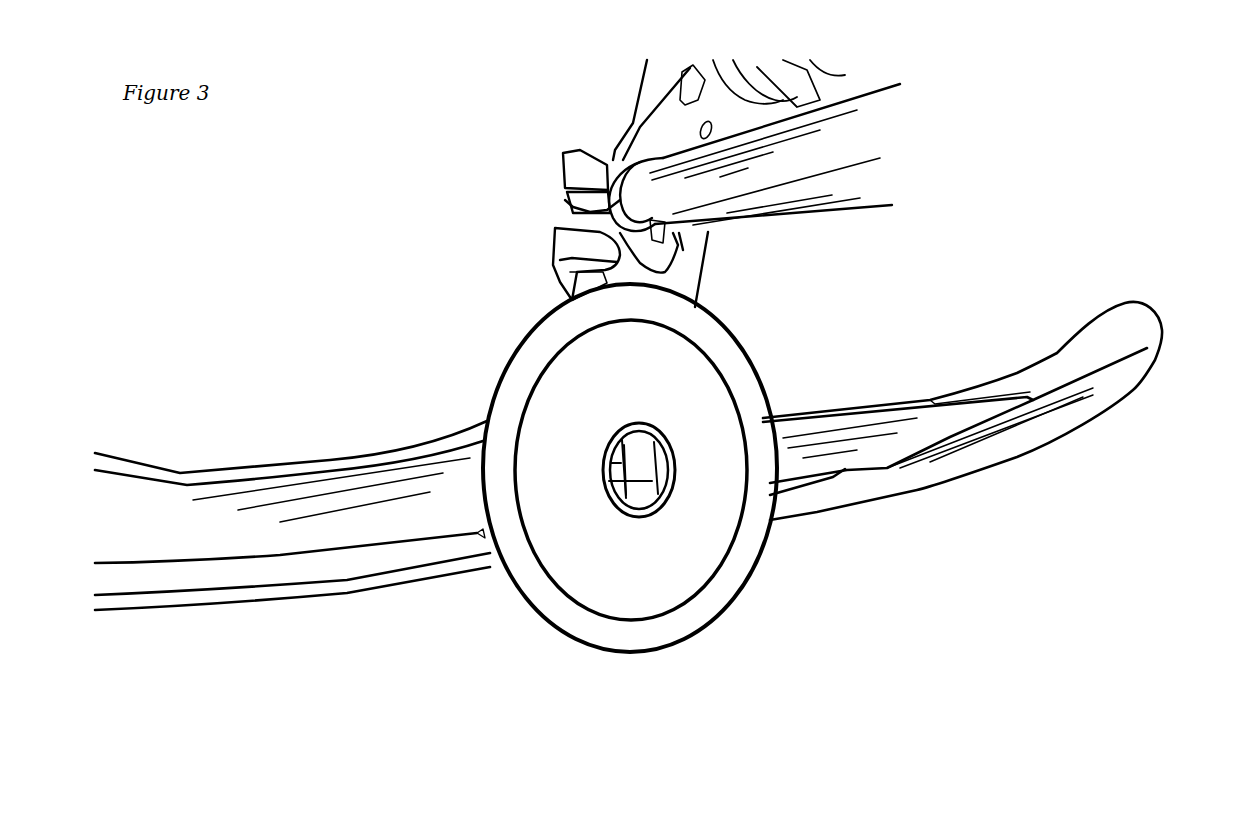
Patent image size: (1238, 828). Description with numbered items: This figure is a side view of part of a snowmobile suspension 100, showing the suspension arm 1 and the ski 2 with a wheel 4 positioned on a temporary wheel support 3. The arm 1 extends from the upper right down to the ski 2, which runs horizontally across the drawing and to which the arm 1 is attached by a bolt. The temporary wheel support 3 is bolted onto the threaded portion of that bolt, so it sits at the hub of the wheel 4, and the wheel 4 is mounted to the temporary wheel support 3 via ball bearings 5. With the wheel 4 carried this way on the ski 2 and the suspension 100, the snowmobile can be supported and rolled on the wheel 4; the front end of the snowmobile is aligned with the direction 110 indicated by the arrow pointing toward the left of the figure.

The arm 1 is at (657, 150).
The ski 2 is at (440, 490).
The temporary wheel support 3 is at (640, 467).
The wheel 4 is at (703, 381).
The ball bearings 5 is at (607, 488).
The snowmobile suspension 100 is at (318, 168).
The direction 110 is at (262, 232).